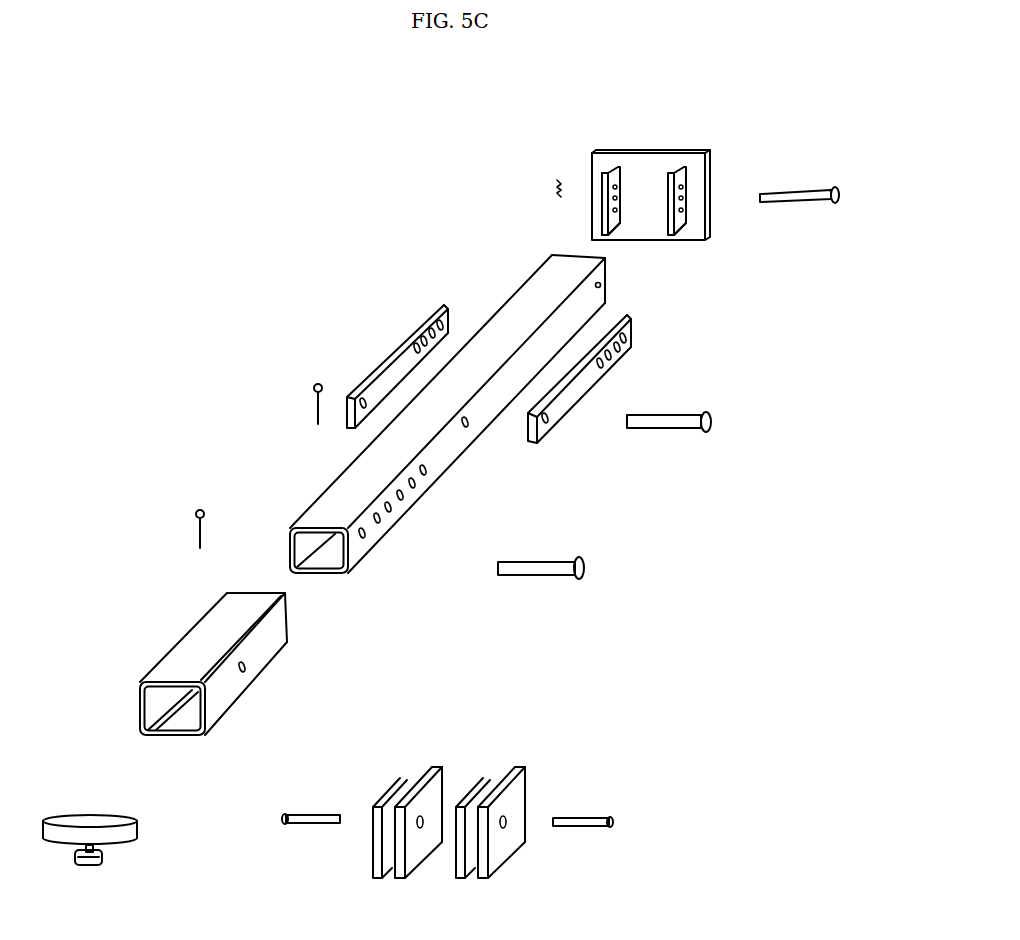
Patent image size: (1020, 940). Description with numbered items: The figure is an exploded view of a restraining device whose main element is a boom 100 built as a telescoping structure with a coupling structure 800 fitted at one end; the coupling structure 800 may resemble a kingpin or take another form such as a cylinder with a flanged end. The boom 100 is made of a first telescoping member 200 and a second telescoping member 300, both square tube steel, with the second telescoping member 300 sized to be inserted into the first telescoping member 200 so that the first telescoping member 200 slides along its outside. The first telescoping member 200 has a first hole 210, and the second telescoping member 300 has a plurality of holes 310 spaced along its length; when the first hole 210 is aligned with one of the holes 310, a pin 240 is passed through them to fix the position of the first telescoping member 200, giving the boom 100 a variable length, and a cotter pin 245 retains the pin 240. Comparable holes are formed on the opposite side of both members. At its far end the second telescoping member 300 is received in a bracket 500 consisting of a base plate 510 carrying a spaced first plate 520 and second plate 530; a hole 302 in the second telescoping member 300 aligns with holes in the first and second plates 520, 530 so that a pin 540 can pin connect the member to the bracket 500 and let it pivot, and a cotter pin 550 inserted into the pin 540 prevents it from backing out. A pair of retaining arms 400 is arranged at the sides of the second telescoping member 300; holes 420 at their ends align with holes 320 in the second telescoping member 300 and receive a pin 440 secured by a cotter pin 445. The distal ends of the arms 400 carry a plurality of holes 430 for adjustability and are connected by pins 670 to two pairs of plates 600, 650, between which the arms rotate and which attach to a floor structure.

The boom 100 is at (204, 373).
The first telescoping member 200 is at (207, 625).
The first hole 210 is at (244, 672).
The pin 240 is at (538, 575).
The cotter pin 245 is at (198, 531).
The second telescoping member 300 is at (347, 490).
The hole 302 is at (601, 285).
The plurality of holes 310 is at (422, 522).
The holes 320 is at (466, 430).
The retaining arms 400 is at (442, 305).
The holes 420 is at (548, 421).
The plurality of holes 430 is at (640, 348).
The pin 440 is at (680, 428).
The cotter pin 445 is at (316, 412).
The bracket 500 is at (813, 97).
The base plate 510 is at (712, 165).
The first plate 520 is at (682, 167).
The second plate 530 is at (614, 167).
The pin 540 is at (795, 201).
The cotter pin 550 is at (557, 180).
The pair of plates 600 is at (523, 746).
The pair of plates 650 is at (432, 746).
The pins 670 is at (305, 827).
The coupling structure 800 is at (97, 870).